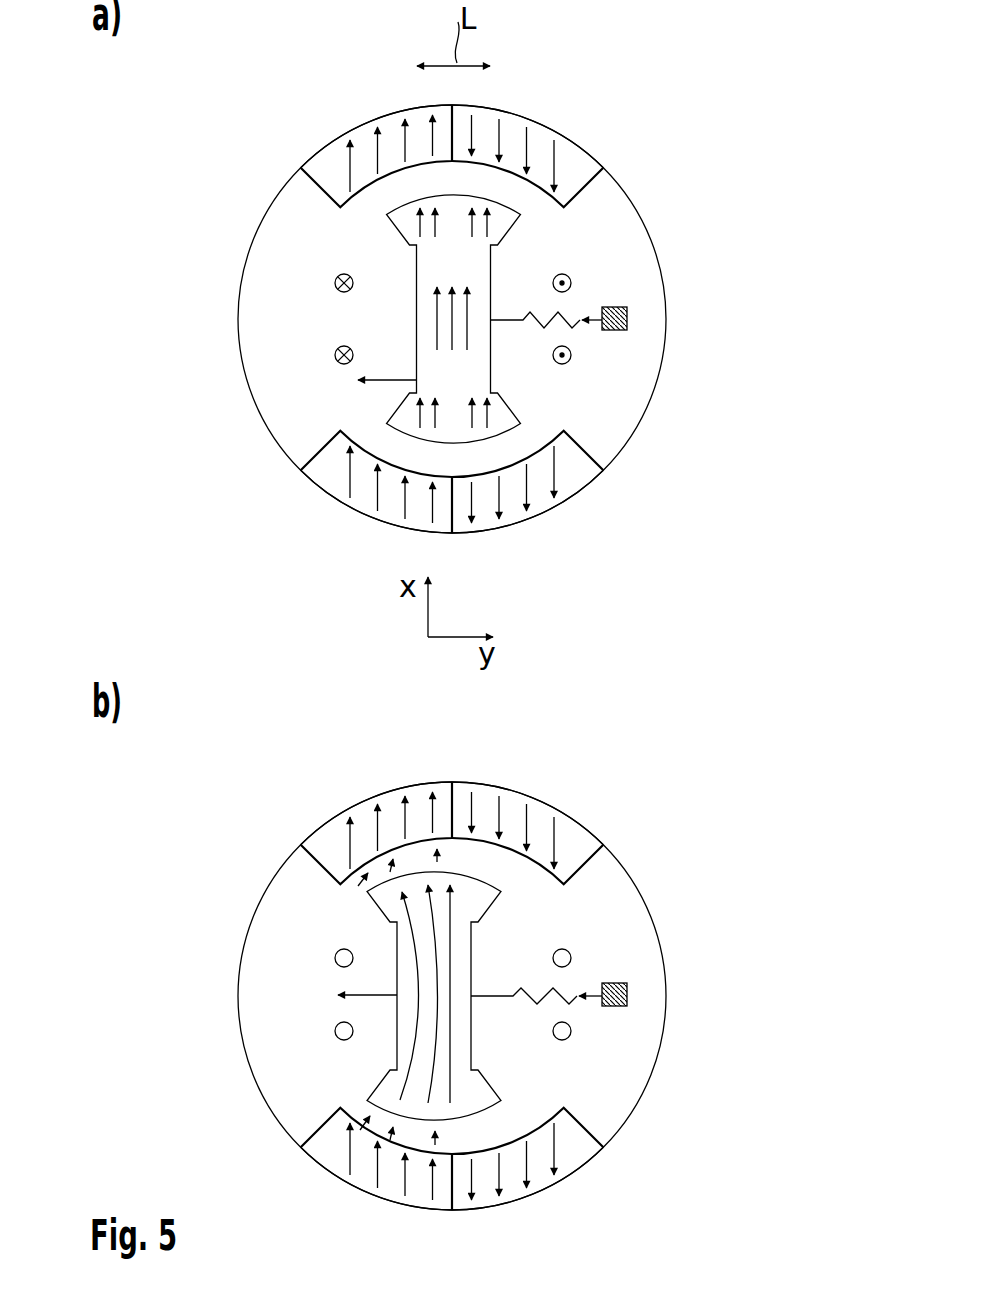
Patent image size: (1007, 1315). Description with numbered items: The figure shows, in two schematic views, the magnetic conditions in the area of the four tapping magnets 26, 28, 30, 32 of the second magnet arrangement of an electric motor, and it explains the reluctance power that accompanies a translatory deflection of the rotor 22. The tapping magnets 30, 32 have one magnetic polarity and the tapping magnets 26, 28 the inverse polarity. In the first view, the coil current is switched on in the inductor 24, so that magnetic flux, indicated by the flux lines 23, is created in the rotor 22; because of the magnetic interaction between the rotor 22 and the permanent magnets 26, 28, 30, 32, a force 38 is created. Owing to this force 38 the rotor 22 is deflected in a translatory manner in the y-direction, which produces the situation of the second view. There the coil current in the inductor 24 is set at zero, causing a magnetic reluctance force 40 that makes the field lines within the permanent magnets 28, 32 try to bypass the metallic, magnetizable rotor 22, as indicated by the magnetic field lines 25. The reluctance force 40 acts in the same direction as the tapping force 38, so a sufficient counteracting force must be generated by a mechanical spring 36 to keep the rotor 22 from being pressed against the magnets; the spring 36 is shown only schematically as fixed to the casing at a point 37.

In FIG. 5a, the rotor 22 is at (468, 262).
In FIG. 5a, the flux lines 23 is at (468, 338).
In FIG. 5a, the inductor 24 is at (333, 282).
In FIG. 5b, the inductor 24 is at (334, 958).
In FIG. 5b, the magnetic field lines 25 is at (363, 891).
In FIG. 5a, the tapping magnet 26 is at (577, 158).
In FIG. 5b, the tapping magnet 26 is at (577, 835).
In FIG. 5a, the tapping magnet 28 is at (327, 158).
In FIG. 5b, the tapping magnet 28 is at (327, 835).
In FIG. 5a, the tapping magnet 30 is at (575, 478).
In FIG. 5b, the tapping magnet 30 is at (575, 1155).
In FIG. 5a, the tapping magnet 32 is at (326, 478).
In FIG. 5b, the tapping magnet 32 is at (326, 1155).
In FIG. 5a, the mechanical spring 36 is at (579, 326).
In FIG. 5b, the mechanical spring 36 is at (574, 1002).
In FIG. 5b, the point 37 is at (602, 993).
In FIG. 5a, the force 38 is at (381, 383).
In FIG. 5b, the magnetic reluctance force 40 is at (382, 998).